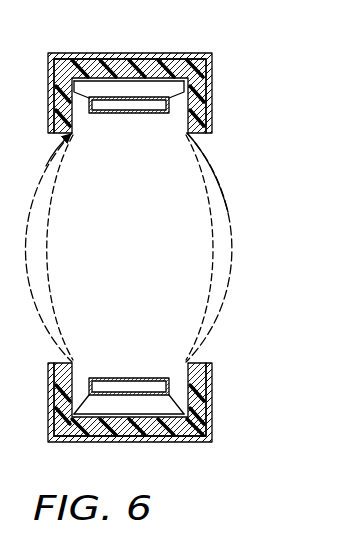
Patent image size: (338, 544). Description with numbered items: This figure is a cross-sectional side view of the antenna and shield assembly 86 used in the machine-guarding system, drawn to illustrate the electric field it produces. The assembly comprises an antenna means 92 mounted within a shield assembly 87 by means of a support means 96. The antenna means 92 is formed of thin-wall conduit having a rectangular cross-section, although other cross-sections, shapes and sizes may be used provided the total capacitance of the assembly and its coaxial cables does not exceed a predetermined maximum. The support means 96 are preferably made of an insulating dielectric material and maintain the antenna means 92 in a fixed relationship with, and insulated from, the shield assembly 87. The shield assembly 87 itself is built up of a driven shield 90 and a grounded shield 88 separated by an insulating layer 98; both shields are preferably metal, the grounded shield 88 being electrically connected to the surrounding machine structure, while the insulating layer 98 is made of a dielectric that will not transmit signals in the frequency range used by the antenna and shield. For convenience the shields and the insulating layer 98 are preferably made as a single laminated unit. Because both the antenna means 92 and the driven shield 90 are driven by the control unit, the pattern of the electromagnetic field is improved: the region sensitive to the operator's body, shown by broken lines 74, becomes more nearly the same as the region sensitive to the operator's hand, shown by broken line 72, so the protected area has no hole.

The broken line 72 is at (212, 210).
The broken lines 74 is at (228, 205).
The antenna and shield assembly 86 is at (224, 403).
The shield assembly 87 is at (148, 70).
The grounded shield 88 is at (219, 74).
The driven shield 90 is at (88, 78).
The antenna means 92 is at (130, 114).
The support means 96 is at (85, 106).
The insulating layer 98 is at (118, 66).